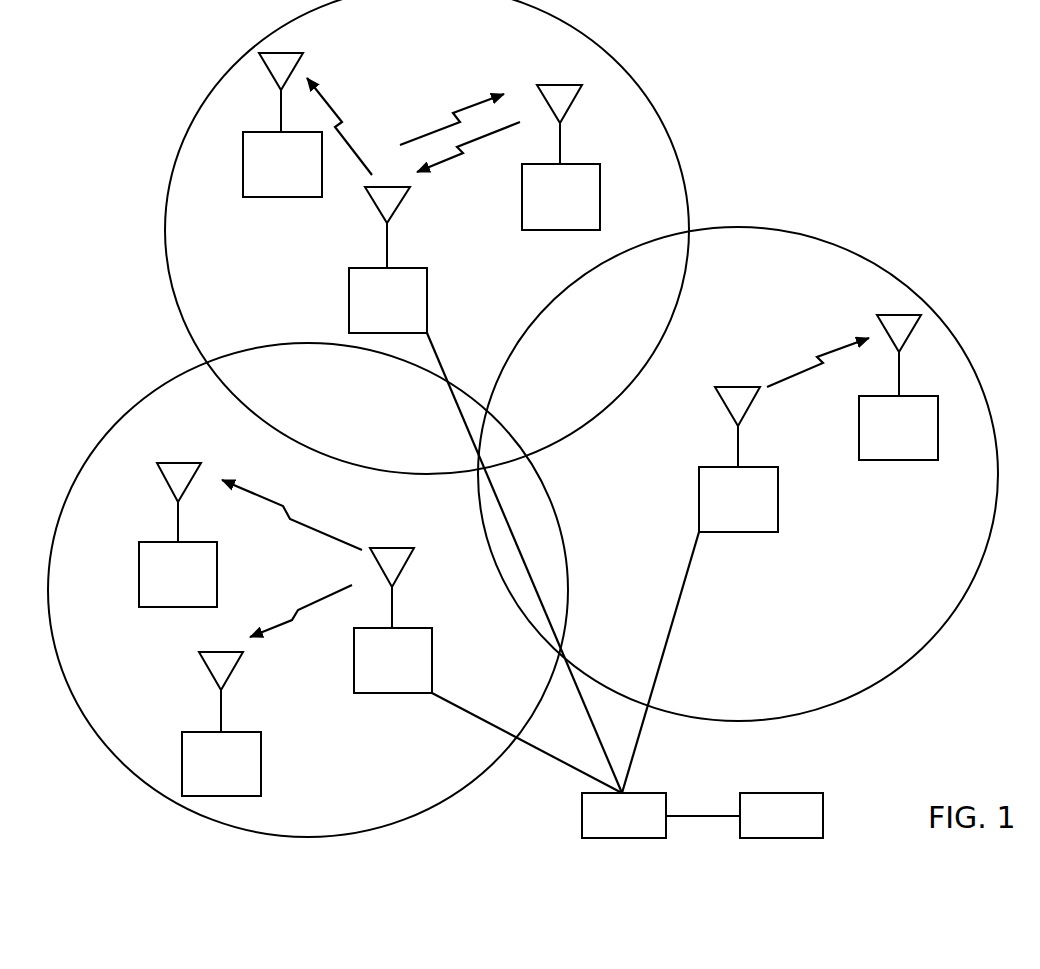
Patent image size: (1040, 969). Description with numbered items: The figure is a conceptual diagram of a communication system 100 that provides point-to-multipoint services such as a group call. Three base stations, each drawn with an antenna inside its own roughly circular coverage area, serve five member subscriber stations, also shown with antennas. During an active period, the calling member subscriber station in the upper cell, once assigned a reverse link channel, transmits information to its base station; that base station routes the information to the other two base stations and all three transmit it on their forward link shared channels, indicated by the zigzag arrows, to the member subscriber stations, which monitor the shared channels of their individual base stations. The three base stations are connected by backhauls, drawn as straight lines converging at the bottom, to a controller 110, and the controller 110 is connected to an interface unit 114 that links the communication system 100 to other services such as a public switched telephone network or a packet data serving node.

The communication system 100 is at (957, 143).
The controller 110 is at (627, 838).
The interface unit 114 is at (785, 838).